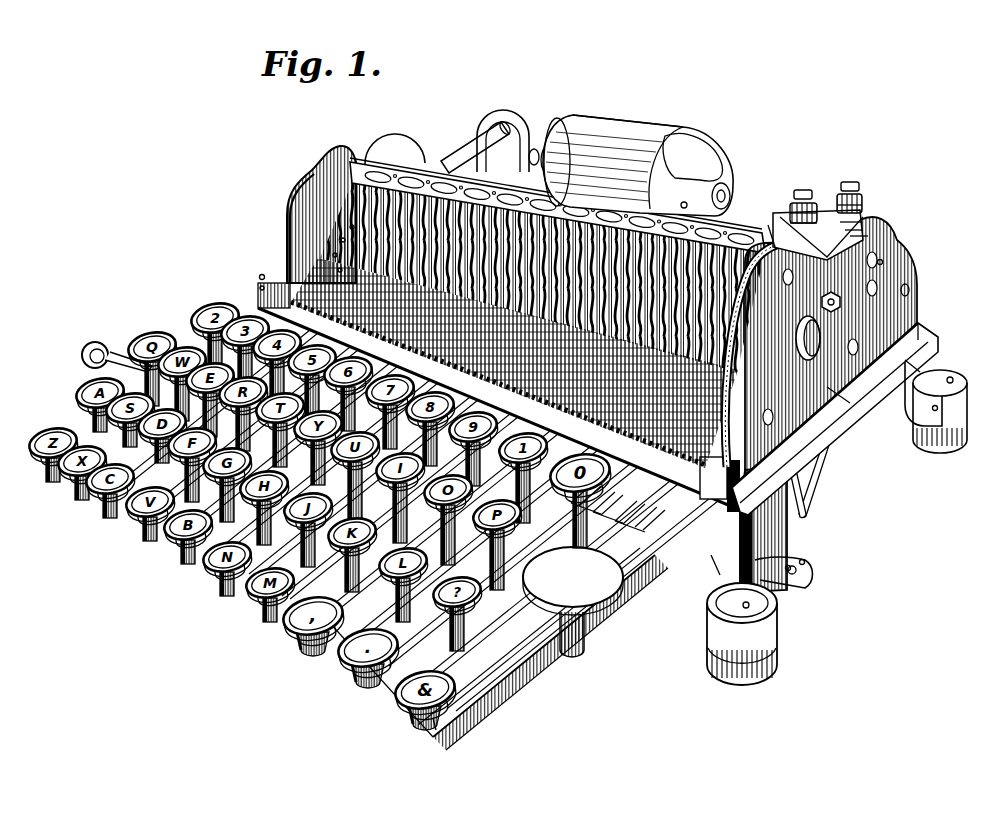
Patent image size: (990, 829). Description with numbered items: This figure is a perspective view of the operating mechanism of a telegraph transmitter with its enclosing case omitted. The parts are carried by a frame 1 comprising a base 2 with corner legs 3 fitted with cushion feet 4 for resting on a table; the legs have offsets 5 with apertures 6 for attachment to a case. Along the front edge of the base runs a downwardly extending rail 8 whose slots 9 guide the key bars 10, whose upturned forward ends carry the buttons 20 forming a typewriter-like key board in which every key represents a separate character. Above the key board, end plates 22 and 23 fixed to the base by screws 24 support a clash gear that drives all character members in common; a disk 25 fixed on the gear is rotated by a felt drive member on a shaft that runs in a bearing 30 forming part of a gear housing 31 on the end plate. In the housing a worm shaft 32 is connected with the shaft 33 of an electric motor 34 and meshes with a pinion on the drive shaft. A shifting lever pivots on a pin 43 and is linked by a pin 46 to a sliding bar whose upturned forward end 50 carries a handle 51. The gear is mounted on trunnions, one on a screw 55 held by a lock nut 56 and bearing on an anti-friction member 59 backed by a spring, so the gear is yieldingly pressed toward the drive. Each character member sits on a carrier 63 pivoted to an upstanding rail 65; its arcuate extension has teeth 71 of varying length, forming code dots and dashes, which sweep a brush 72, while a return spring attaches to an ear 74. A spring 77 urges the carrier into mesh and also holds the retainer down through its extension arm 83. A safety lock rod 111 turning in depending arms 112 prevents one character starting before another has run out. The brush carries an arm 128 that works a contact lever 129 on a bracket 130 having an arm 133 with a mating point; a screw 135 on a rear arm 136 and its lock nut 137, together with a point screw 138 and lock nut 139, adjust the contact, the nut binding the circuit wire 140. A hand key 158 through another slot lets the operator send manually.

The frame 1 is at (906, 286).
The base 2 is at (918, 329).
The corner legs 3 is at (935, 355).
The cushion feet 4 is at (962, 416).
The offsets 5 is at (951, 379).
The apertures 6 is at (936, 407).
The front rail 8 is at (921, 373).
The slots 9 is at (656, 567).
The key bars 10 is at (440, 714).
The buttons 20 is at (413, 707).
The end plate 22 is at (347, 220).
The end plate 23 is at (818, 356).
The screws 24 is at (262, 288).
The disk 25 is at (407, 140).
The bearing 30 is at (470, 137).
The gear housing 31 is at (500, 112).
The worm shaft 32 is at (531, 150).
The motor shaft 33 is at (549, 148).
The electric motor 34 is at (602, 125).
The pin 43 is at (352, 227).
The pin 46 is at (848, 390).
The upturned forward end 50 is at (117, 362).
The handle 51 is at (107, 347).
The screw 55 is at (840, 299).
The lock nut 56 is at (880, 262).
The anti-friction member 59 is at (789, 570).
The carrier 63 is at (335, 265).
The upstanding rail 65 is at (335, 255).
The teeth 71 is at (352, 180).
The brush 72 is at (393, 165).
The ear 74 is at (343, 240).
The spring 77 is at (340, 270).
The extension arm 83 is at (262, 277).
The rod 111 is at (806, 516).
The arms 112 is at (818, 494).
The arm 128 is at (773, 228).
The contact lever 129 is at (862, 230).
The bracket 130 is at (868, 236).
The arm 133 is at (849, 190).
The screw 135 is at (852, 200).
The rear arm 136 is at (858, 222).
The lock nut 137 is at (854, 212).
The screw 138 is at (805, 200).
The lock nut 139 is at (818, 209).
The circuit wire 140 is at (792, 210).
The hand key 158 is at (548, 640).